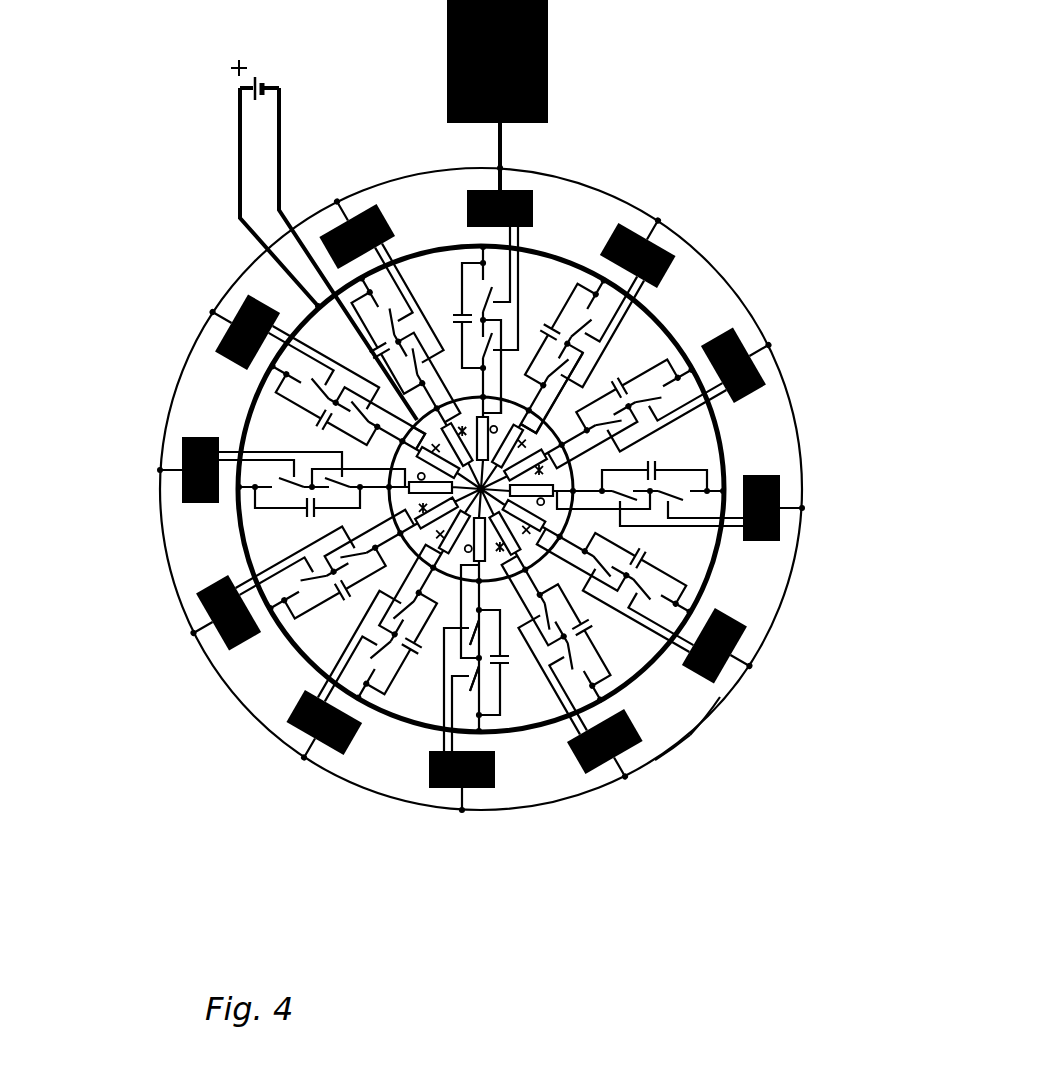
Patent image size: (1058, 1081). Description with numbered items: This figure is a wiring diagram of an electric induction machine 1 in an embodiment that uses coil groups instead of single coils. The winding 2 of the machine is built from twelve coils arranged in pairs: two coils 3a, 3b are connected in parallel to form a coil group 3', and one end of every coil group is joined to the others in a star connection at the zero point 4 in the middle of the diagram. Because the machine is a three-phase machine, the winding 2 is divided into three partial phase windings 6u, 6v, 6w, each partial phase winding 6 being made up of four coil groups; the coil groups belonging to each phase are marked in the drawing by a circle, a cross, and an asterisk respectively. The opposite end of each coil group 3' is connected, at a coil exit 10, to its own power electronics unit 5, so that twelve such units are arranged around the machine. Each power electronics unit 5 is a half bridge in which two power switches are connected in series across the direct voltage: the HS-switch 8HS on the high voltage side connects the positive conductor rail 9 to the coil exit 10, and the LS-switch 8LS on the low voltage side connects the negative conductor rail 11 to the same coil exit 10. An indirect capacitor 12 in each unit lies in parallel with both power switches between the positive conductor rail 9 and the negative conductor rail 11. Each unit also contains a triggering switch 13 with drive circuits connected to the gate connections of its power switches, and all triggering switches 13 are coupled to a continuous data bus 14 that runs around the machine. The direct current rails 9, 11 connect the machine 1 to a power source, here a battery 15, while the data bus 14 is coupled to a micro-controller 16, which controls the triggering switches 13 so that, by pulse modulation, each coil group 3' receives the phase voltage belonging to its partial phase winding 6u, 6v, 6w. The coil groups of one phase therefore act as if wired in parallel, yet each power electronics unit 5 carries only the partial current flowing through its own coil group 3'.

The electric induction machine 1 is at (262, 75).
The winding 2 is at (556, 474).
The coil 3a is at (543, 427).
The coil 3b is at (503, 400).
The coil group 3' is at (258, 428).
The zero point 4 is at (393, 507).
The power electronics unit 5 is at (386, 769).
The partial phase winding 6 is at (352, 628).
The partial phase winding 6u is at (560, 676).
The partial phase winding 6v is at (566, 701).
The partial phase winding 6w is at (556, 711).
The LS-switch 8LS is at (487, 645).
The HS-switch 8HS is at (500, 670).
The positive conductor rail 9 is at (667, 747).
The coil exit 10 is at (672, 543).
The negative conductor rail 11 is at (717, 710).
The indirect capacitor 12 is at (565, 425).
The triggering switch 13 is at (785, 523).
The data bus 14 is at (790, 375).
The battery 15 is at (262, 90).
The micro-controller 16 is at (548, 12).